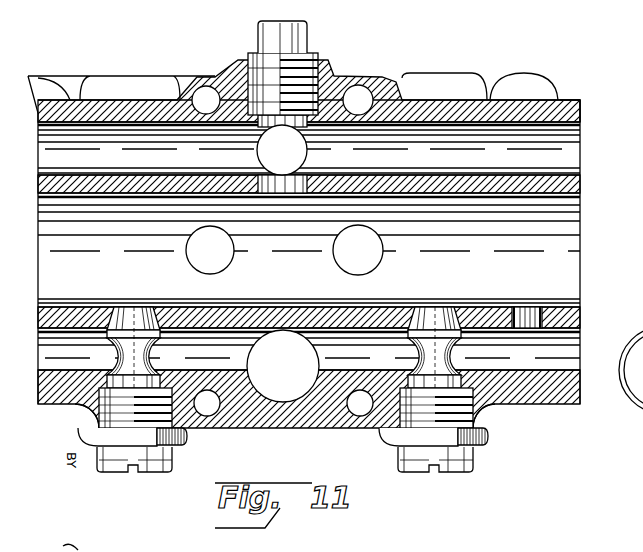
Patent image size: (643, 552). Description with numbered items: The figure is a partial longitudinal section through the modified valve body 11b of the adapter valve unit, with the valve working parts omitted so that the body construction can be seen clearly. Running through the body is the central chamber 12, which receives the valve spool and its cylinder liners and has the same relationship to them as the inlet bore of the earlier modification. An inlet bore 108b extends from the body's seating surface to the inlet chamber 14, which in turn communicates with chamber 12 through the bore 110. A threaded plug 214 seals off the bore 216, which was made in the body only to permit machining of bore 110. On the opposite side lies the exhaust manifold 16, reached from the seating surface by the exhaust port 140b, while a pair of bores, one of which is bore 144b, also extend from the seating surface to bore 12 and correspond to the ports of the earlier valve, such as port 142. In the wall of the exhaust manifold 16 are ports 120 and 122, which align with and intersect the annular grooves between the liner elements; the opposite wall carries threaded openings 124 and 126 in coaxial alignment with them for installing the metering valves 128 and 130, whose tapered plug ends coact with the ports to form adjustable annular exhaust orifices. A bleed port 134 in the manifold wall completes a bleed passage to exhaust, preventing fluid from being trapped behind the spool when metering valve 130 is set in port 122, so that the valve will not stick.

The valve body 11b is at (571, 111).
The chamber 12 is at (452, 176).
The inlet chamber 14 is at (570, 149).
The exhaust manifold 16 is at (577, 358).
The inlet bore 108b is at (306, 150).
The bore 110 is at (304, 176).
The port 120 is at (113, 308).
The port 122 is at (458, 307).
The threaded opening 124 is at (80, 414).
The threaded opening 126 is at (483, 409).
The metering valve 128 is at (172, 466).
The metering valve 130 is at (474, 456).
The bleed port 134 is at (530, 330).
The exhaust port 140b is at (316, 367).
The port 142 is at (230, 263).
The bore 144b is at (375, 262).
The threaded plug 214 is at (297, 43).
The bore 216 is at (318, 74).